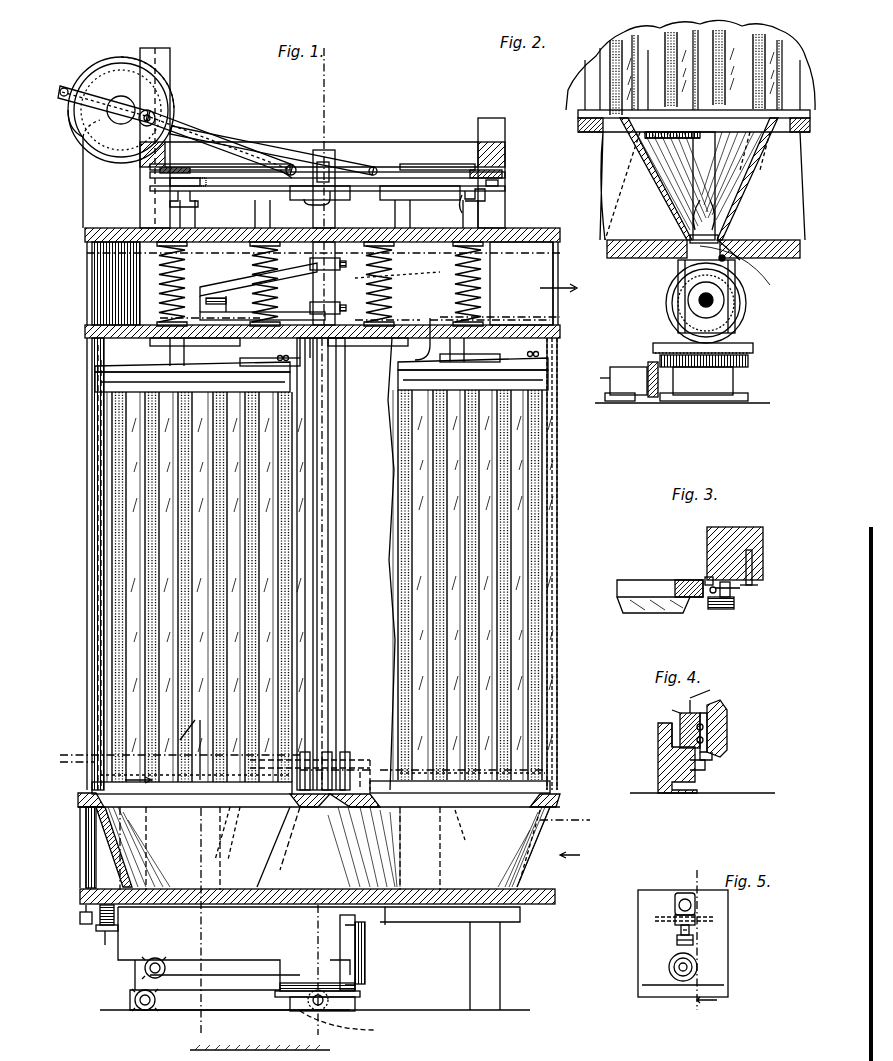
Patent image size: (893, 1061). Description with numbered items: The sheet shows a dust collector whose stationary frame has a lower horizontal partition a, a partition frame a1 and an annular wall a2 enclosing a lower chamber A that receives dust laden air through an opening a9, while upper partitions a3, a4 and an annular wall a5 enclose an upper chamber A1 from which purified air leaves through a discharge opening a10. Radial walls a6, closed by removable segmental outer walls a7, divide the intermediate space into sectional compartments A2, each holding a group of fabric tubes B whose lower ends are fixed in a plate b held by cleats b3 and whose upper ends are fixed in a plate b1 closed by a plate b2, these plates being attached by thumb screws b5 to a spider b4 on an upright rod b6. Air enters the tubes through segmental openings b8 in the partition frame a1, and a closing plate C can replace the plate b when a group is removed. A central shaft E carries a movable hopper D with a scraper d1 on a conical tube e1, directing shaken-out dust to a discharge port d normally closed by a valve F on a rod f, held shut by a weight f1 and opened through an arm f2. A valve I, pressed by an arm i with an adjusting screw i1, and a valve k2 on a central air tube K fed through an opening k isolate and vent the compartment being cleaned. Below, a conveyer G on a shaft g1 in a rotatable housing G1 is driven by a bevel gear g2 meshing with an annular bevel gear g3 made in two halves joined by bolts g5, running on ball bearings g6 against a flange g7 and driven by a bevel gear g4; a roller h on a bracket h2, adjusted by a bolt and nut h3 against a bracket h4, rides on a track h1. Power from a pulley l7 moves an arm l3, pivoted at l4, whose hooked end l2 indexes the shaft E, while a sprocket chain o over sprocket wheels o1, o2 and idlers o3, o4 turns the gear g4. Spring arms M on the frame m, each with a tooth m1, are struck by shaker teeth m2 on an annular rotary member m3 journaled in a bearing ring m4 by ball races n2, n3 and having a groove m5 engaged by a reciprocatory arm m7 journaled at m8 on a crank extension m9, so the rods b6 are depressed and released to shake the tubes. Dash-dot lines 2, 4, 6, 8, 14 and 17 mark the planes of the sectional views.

In FIG. 1, the frame plate 8 is at (92, 252).
In FIG. 1, the annular wall a5 is at (92, 290).
In FIG. 1, the upper chamber A1 is at (521, 283).
In FIG. 1, the discharge opening a10 is at (556, 270).
In FIG. 1, the section line 17 is at (350, 305).
In FIG. 1, the journal m8 is at (160, 48).
In FIG. 1, the annular rotary member m3 is at (478, 142).
In FIG. 1, the sprocket wheel o1 is at (98, 120).
In FIG. 1, the arm or extension of the crank m9 is at (147, 110).
In FIG. 1, the pulley l7 is at (176, 92).
In FIG. 1, the pivot l4 is at (64, 86).
In FIG. 1, the arm l3 is at (210, 128).
In FIG. 1, the hooked end portion l2 is at (300, 162).
In FIG. 1, the reciprocatory arm m7 is at (325, 160).
In FIG. 1, the central upright shaft E is at (325, 165).
In FIG. 1, the sprocket chain o is at (82, 180).
In FIG. 1, the frame m is at (380, 172).
In FIG. 1, the shaker teeth m2 is at (195, 178).
In FIG. 3, the shaker teeth m2 is at (640, 612).
In FIG. 1, the bearing ring m4 is at (500, 178).
In FIG. 3, the bearing ring m4 is at (735, 600).
In FIG. 1, the upwardly extending tooth m1 is at (490, 196).
In FIG. 1, the spring arm M is at (246, 200).
In FIG. 1, the arm i is at (300, 200).
In FIG. 1, the valve I is at (287, 290).
In FIG. 1, the adjusting screw i1 is at (226, 301).
In FIG. 1, the upright rod or stem b6 is at (185, 280).
In FIG. 1, the upper horizontal partition a3 is at (348, 262).
In FIG. 1, the plate b2 is at (398, 298).
In FIG. 1, the upper horizontal partition a4 is at (395, 300).
In FIG. 1, the segmental closing plate C is at (236, 350).
In FIG. 1, the radial walls a6 is at (92, 348).
In FIG. 1, the central tube K is at (337, 548).
In FIG. 1, the sectional compartments A2 is at (90, 486).
In FIG. 1, the segmental outer wall a7 is at (92, 420).
In FIG. 1, the upper securing member or plate b1 is at (95, 380).
In FIG. 1, the spider b4 is at (300, 372).
In FIG. 1, the tubes B is at (260, 520).
In FIG. 2, the tubes B is at (680, 30).
In FIG. 1, the cleats b3 is at (520, 760).
In FIG. 2, the cleats b3 is at (600, 118).
In FIG. 1, the thumb screws b5 is at (215, 735).
In FIG. 1, the section line 2 is at (200, 870).
In FIG. 1, the flow line 14 is at (321, 800).
In FIG. 1, the opening k is at (345, 760).
In FIG. 1, the lower securing member or plate b is at (92, 785).
In FIG. 2, the lower securing member or plate b is at (780, 105).
In FIG. 1, the spider or partition frame a1 is at (558, 800).
In FIG. 2, the spider or partition frame a1 is at (636, 133).
In FIG. 1, the movable dust hopper D is at (323, 847).
In FIG. 2, the movable dust hopper D is at (755, 150).
In FIG. 1, the conical tube e1 is at (280, 848).
In FIG. 2, the conical tube e1 is at (650, 185).
In FIG. 1, the segmental openings b8 is at (225, 815).
In FIG. 1, the valve k2 is at (300, 810).
In FIG. 1, the lower chamber A is at (460, 847).
In FIG. 1, the annular wall a2 is at (115, 840).
In FIG. 1, the opening a9 is at (545, 880).
In FIG. 1, the lower horizontal partition a is at (445, 895).
In FIG. 2, the lower horizontal partition a is at (628, 258).
In FIG. 1, the rotatable conveyer housing G1 is at (251, 958).
In FIG. 2, the rotatable conveyer housing G1 is at (668, 310).
In FIG. 5, the rotatable conveyer housing G1 is at (718, 968).
In FIG. 1, the idler sprocket wheel o3 is at (165, 958).
In FIG. 1, the idler sprocket wheel o4 is at (135, 996).
In FIG. 1, the sprocket wheel o2 is at (305, 1000).
In FIG. 1, the section line 4 is at (317, 976).
In FIG. 1, the weight f1 is at (82, 924).
In FIG. 1, the roller h is at (105, 931).
In FIG. 5, the roller h is at (675, 904).
In FIG. 1, the shaft g1 is at (368, 950).
In FIG. 1, the bevel gear g2 is at (366, 970).
In FIG. 2, the bevel gear g2 is at (740, 345).
In FIG. 1, the annular bevel gear g3 is at (360, 990).
In FIG. 2, the annular bevel gear g3 is at (748, 363).
In FIG. 4, the annular bevel gear g3 is at (728, 712).
In FIG. 1, the outwardly extending flange g7 is at (355, 1002).
In FIG. 2, the outwardly extending flange g7 is at (720, 390).
In FIG. 4, the outwardly extending flange g7 is at (658, 733).
In FIG. 1, the bevel gear g4 is at (352, 1025).
In FIG. 2, the bevel gear g4 is at (652, 397).
In FIG. 1, the annular track h1 is at (515, 925).
In FIG. 2, the scraper d1 is at (680, 232).
In FIG. 2, the dust discharge port d is at (740, 262).
In FIG. 2, the rod f is at (752, 286).
In FIG. 2, the valve F is at (740, 295).
In FIG. 2, the conveyer G is at (695, 300).
In FIG. 2, the arm f2 is at (720, 195).
In FIG. 3, the groove m5 is at (690, 578).
In FIG. 3, the ball race n2 is at (708, 578).
In FIG. 3, the ball race n3 is at (718, 610).
In FIG. 4, the ball bearings g6 is at (712, 697).
In FIG. 4, the bolts g5 is at (712, 743).
In FIG. 5, the section line 6 is at (705, 941).
In FIG. 5, the bracket h2 is at (700, 918).
In FIG. 5, the bolt and nut h3 is at (681, 930).
In FIG. 5, the bracket h4 is at (693, 940).